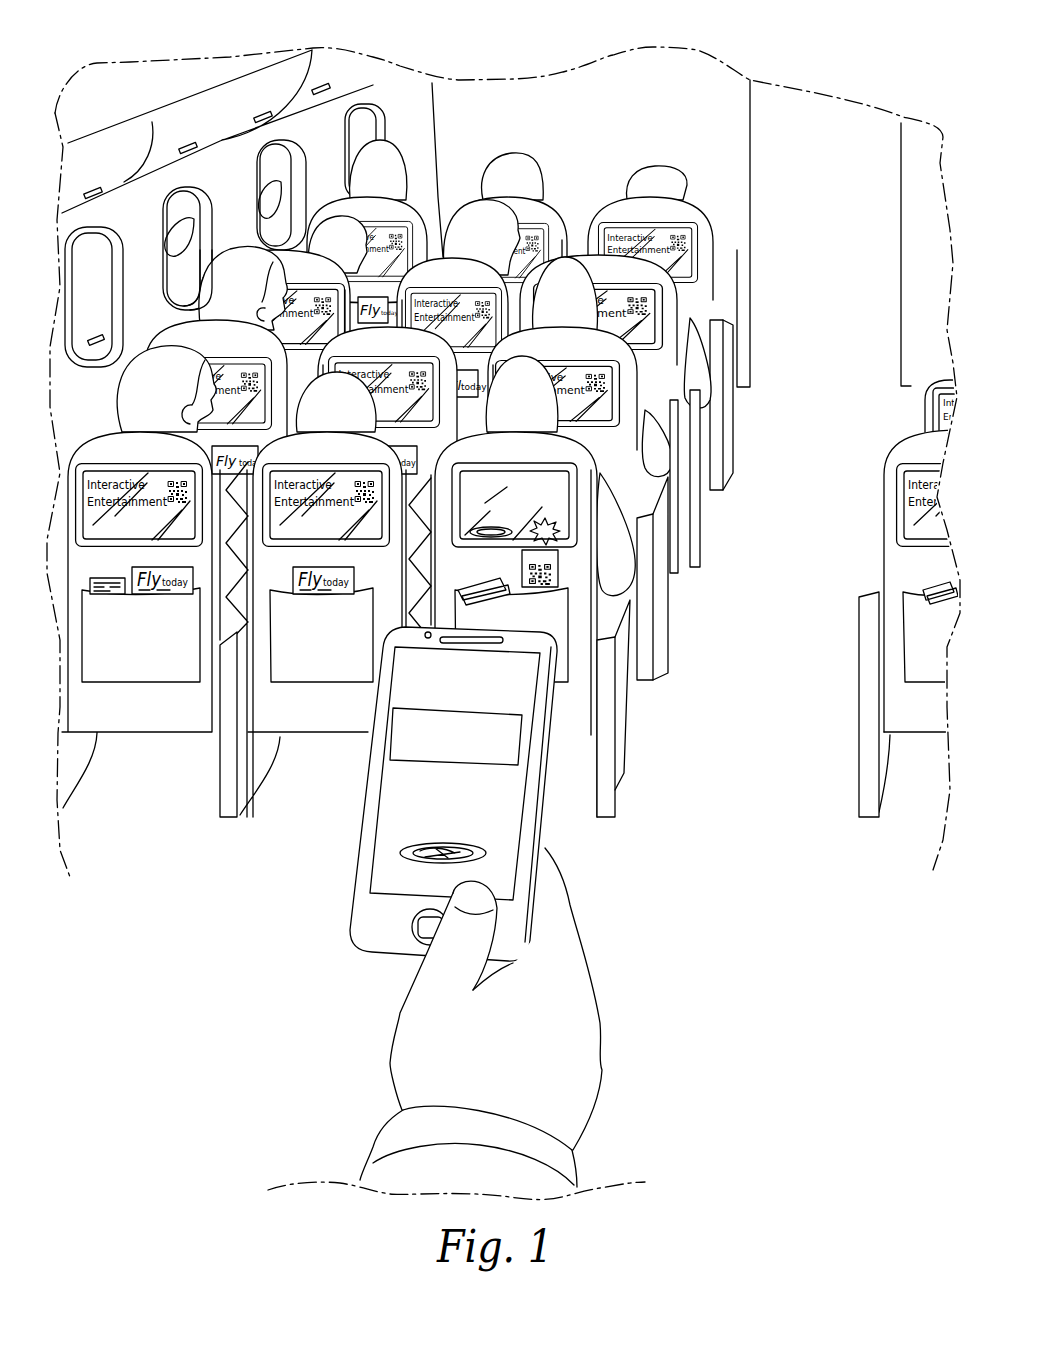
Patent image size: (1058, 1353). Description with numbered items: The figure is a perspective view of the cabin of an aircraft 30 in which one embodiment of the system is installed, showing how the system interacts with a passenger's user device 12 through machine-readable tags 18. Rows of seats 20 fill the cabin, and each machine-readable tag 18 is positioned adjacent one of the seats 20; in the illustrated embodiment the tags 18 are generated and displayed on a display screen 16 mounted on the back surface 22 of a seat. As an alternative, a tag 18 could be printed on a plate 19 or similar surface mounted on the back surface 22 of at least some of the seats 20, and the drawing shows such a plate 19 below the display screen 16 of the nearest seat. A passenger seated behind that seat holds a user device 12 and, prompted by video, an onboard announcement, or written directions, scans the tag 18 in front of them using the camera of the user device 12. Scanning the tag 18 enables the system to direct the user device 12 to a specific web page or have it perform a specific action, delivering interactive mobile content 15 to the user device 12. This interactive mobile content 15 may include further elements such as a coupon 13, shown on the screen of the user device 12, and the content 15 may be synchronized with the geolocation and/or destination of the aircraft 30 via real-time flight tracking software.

The user device 12 is at (486, 794).
The coupon 13 is at (493, 752).
The interactive mobile content 15 is at (392, 823).
The display screen 16 is at (557, 495).
The machine-readable tag 18 is at (606, 380).
The plate 19 is at (558, 555).
The seat 20 is at (573, 448).
The back surface 22 is at (606, 624).
The aircraft 30 is at (218, 173).